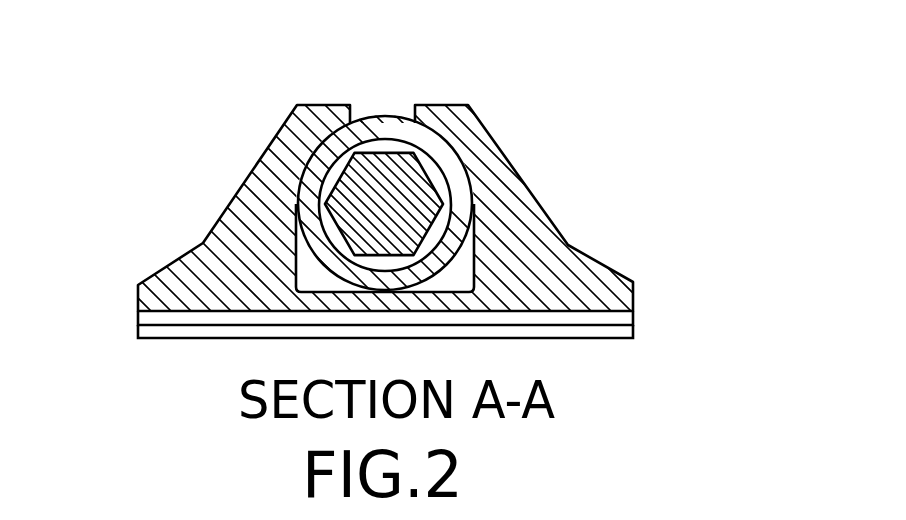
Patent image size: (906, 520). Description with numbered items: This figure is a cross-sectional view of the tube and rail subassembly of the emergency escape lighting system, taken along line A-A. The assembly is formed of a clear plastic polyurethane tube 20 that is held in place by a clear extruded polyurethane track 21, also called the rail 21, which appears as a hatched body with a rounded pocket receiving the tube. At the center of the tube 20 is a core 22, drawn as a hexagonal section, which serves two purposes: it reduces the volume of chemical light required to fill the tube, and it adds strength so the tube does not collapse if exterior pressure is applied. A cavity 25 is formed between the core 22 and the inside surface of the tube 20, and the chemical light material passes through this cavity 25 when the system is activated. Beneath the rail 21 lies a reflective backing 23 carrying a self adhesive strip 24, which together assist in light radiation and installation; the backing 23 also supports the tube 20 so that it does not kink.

The clear plastic polyurethane tube 20 is at (382, 126).
The clear extruded polyurethane track 21 is at (537, 232).
The core 22 is at (345, 196).
The reflective backing 23 is at (565, 318).
The self adhesive strip 24 is at (633, 328).
The cavity 25 is at (399, 147).